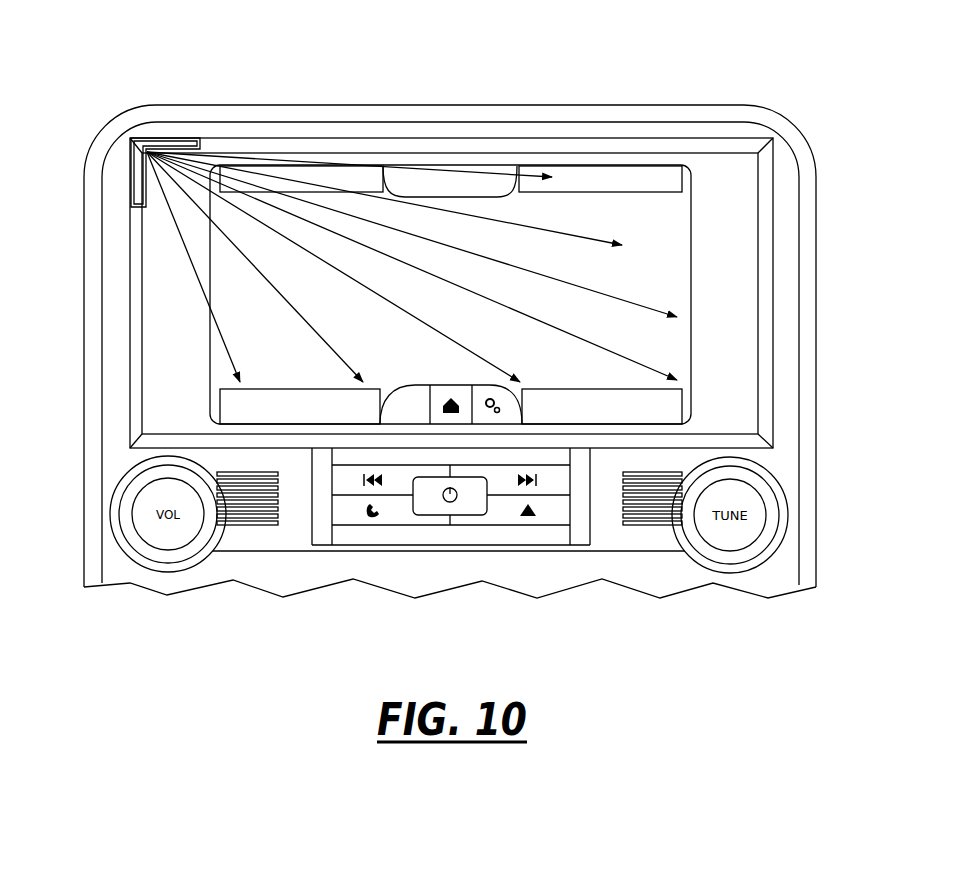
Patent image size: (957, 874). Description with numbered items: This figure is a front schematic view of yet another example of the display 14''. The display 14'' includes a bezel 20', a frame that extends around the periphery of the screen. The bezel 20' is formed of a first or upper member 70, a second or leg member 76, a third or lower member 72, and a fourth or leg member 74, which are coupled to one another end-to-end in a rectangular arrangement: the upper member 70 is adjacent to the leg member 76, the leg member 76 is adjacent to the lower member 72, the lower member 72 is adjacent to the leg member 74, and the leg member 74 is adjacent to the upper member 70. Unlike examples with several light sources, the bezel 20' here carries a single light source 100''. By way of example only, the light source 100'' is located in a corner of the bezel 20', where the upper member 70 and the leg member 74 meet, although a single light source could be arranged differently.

The display 14'' is at (462, 311).
The bezel 20' is at (508, 293).
The upper member 70 is at (438, 136).
The lower member 72 is at (706, 433).
The leg member 74 is at (129, 349).
The leg member 76 is at (766, 265).
The light source 100'' is at (367, 221).